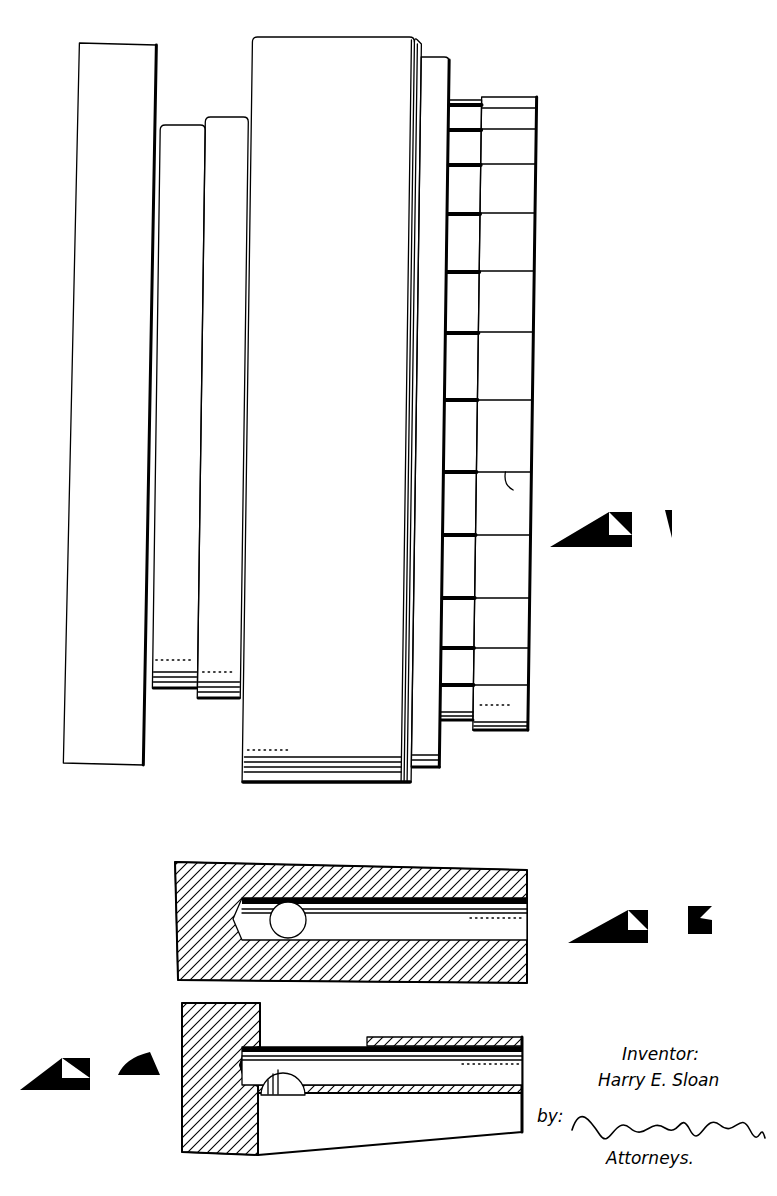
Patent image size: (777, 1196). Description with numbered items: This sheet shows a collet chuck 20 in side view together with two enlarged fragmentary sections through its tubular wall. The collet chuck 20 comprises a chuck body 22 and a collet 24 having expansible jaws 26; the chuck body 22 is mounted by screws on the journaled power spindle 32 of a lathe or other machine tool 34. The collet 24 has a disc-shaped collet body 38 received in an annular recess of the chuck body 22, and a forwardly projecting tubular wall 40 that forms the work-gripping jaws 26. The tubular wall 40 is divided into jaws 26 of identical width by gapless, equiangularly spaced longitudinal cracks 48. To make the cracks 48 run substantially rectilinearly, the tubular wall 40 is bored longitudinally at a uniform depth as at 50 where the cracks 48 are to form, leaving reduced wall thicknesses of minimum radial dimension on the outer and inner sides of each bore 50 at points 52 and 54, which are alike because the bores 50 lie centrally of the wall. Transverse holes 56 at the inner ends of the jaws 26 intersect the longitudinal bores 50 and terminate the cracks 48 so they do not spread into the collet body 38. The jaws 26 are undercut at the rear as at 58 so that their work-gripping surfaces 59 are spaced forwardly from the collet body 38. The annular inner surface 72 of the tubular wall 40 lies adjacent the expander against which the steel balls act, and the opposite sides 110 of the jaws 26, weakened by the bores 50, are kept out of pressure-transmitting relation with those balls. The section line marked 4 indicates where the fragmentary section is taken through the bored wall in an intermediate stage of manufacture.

In FIG. 1, the collet chuck 20 is at (331, 392).
In FIG. 1, the chuck body 22 is at (331, 37).
In FIG. 1, the collet 24 is at (519, 427).
In FIG. 3, the collet 24 is at (268, 984).
In FIG. 4, the collet 24 is at (263, 1020).
In FIG. 1, the expansible jaws 26 is at (519, 395).
In FIG. 1, the power spindle 32 is at (182, 143).
In FIG. 1, the machine tool 34 is at (159, 83).
In FIG. 1, the collet body 38 is at (446, 98).
In FIG. 4, the collet body 38 is at (196, 1113).
In FIG. 1, the tubular wall 40 is at (531, 249).
In FIG. 3, the tubular wall 40 is at (367, 912).
In FIG. 4, the tubular wall 40 is at (412, 1103).
In FIG. 1, the longitudinal cracks 48 is at (507, 598).
In FIG. 3, the longitudinal bores 50 is at (396, 926).
In FIG. 4, the longitudinal bores 50 is at (498, 1080).
In FIG. 4, the reduced outer wall thickness 52 is at (466, 1041).
In FIG. 4, the reduced inner wall thickness 54 is at (450, 1088).
In FIG. 3, the transverse holes 56 is at (306, 925).
In FIG. 4, the transverse holes 56 is at (293, 1050).
In FIG. 1, the undercut 58 is at (469, 722).
In FIG. 4, the undercut 58 is at (401, 1043).
In FIG. 1, the work-gripping surfaces 59 is at (510, 696).
In FIG. 4, the work-gripping surfaces 59 is at (429, 1039).
In FIG. 4, the inner surface of the tubular collet wall 72 is at (485, 1094).
In FIG. 1, the jaw sides 110 is at (531, 213).
In FIG. 3, the section line 4- 4 is at (206, 915).